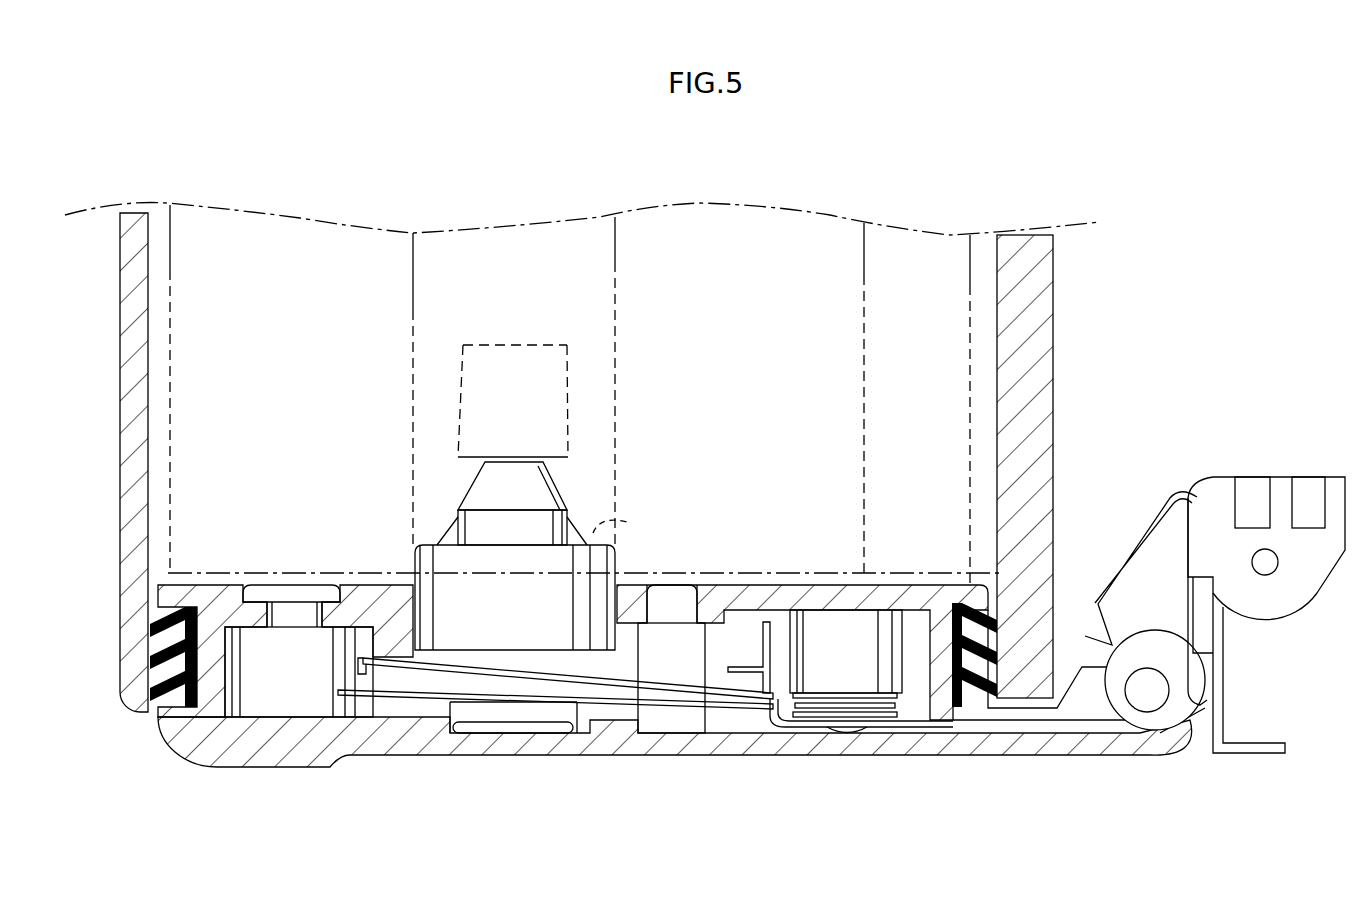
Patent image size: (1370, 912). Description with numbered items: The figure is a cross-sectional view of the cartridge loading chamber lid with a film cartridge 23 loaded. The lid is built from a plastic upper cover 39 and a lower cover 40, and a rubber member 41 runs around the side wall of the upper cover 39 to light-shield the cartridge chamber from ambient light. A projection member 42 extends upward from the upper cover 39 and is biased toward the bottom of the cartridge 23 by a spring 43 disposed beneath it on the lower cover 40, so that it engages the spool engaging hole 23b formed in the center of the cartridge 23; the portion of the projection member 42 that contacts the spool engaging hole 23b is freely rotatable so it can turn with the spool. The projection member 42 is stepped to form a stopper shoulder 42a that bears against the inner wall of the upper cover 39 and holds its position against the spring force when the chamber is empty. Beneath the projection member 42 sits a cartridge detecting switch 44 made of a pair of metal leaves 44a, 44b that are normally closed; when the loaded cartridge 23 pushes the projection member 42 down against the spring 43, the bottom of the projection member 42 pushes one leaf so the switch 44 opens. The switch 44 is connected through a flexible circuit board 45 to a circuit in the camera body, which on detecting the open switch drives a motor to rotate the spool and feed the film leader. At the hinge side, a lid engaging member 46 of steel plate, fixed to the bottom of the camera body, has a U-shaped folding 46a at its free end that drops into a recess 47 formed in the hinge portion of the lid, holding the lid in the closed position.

The cartridge 23 is at (792, 275).
The spool engaging hole 23b is at (630, 522).
The upper cover 39 is at (813, 597).
The lower cover 40 is at (228, 755).
The rubber member 41 is at (153, 682).
The projection member 42 is at (487, 492).
The stopper shoulder 42a is at (405, 645).
The spring 43 is at (522, 728).
The cartridge detecting switch 44 is at (706, 744).
The metal leaf 44a is at (673, 687).
The metal leaf 44b is at (717, 707).
The flexible circuit board 45 is at (1283, 488).
The lid engaging member 46 is at (1217, 742).
The U-shaped folding 46a is at (1090, 633).
The recess 47 is at (1107, 670).